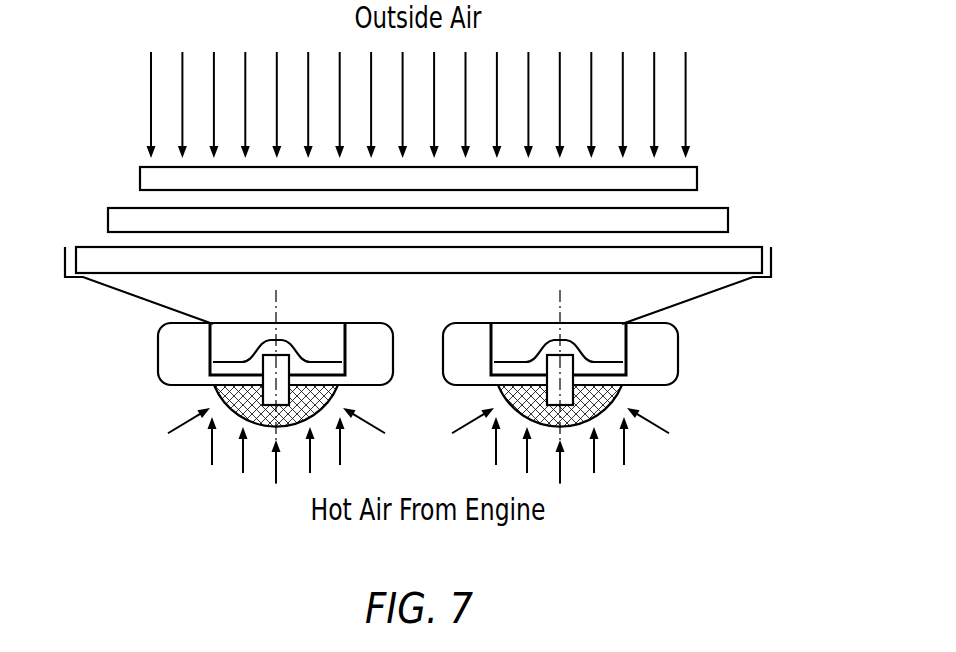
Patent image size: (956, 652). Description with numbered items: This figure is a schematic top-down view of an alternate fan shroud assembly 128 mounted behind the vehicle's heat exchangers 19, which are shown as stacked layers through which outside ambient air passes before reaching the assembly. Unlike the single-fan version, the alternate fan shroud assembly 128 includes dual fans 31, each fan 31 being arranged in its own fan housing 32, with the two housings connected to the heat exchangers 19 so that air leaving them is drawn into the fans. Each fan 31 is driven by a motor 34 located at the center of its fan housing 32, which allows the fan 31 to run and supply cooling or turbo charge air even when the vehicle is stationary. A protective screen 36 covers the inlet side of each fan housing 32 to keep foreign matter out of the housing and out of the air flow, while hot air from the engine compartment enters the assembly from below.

The heat exchangers 19 is at (798, 155).
The fan 31 is at (207, 338).
The fan housing 32 is at (158, 353).
The motor 34 is at (278, 352).
The protective screen 36 is at (213, 391).
The alternate fan shroud assembly 128 is at (775, 342).